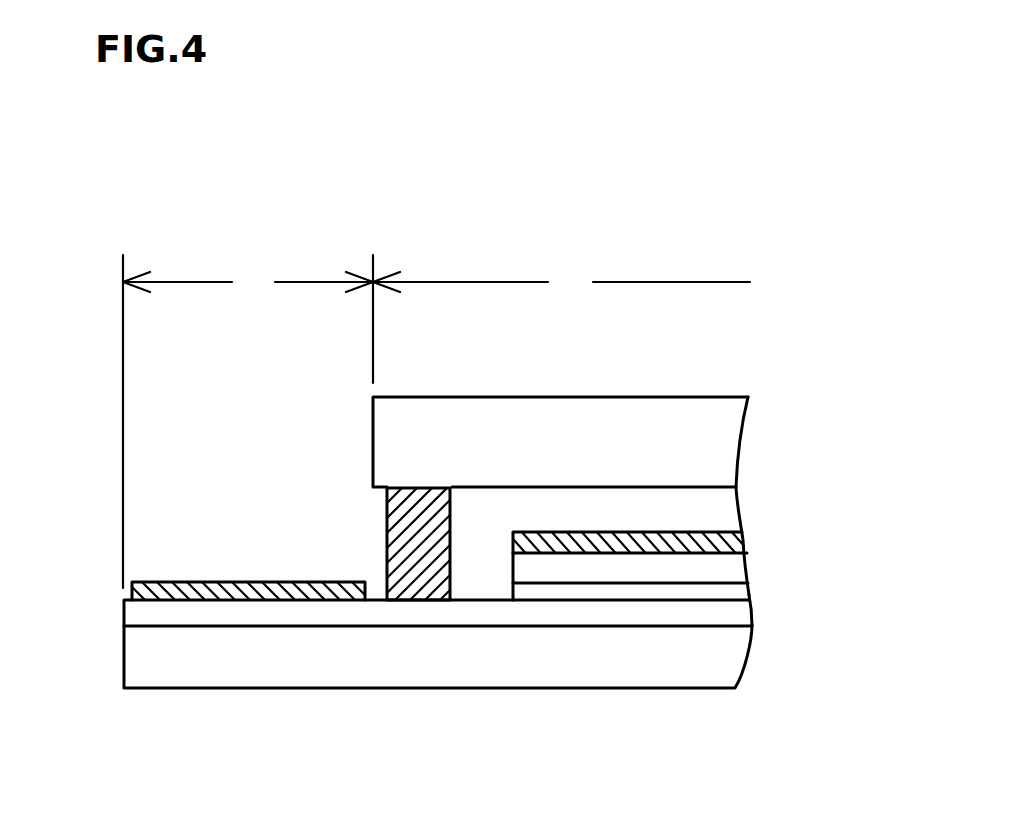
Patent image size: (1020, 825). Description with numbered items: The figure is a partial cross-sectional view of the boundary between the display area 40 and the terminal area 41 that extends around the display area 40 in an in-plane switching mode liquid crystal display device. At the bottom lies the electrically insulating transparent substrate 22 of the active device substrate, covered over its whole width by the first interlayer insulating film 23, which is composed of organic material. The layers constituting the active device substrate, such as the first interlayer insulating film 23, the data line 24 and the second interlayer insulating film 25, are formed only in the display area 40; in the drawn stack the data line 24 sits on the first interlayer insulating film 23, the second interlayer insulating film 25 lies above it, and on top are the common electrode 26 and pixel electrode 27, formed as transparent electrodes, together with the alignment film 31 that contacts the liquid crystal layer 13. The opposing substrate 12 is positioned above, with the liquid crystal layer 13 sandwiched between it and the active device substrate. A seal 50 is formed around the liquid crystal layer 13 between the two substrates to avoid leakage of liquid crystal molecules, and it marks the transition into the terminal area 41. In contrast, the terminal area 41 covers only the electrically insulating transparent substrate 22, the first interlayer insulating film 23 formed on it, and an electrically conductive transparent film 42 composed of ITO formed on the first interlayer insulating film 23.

The opposing substrate 12 is at (722, 416).
The liquid crystal layer 13 is at (713, 506).
The electrically insulating transparent substrate 22 is at (130, 668).
The first interlayer insulating film 23 is at (123, 604).
The data line 24 is at (740, 598).
The second interlayer insulating film 25 is at (730, 573).
The common electrode 26 is at (707, 529).
The pixel electrode 27 is at (707, 529).
The alignment film 31 is at (758, 540).
The display area 40 is at (561, 282).
The terminal area 41 is at (248, 421).
The electrically conductive transparent film 42 is at (190, 582).
The seal 50 is at (387, 541).